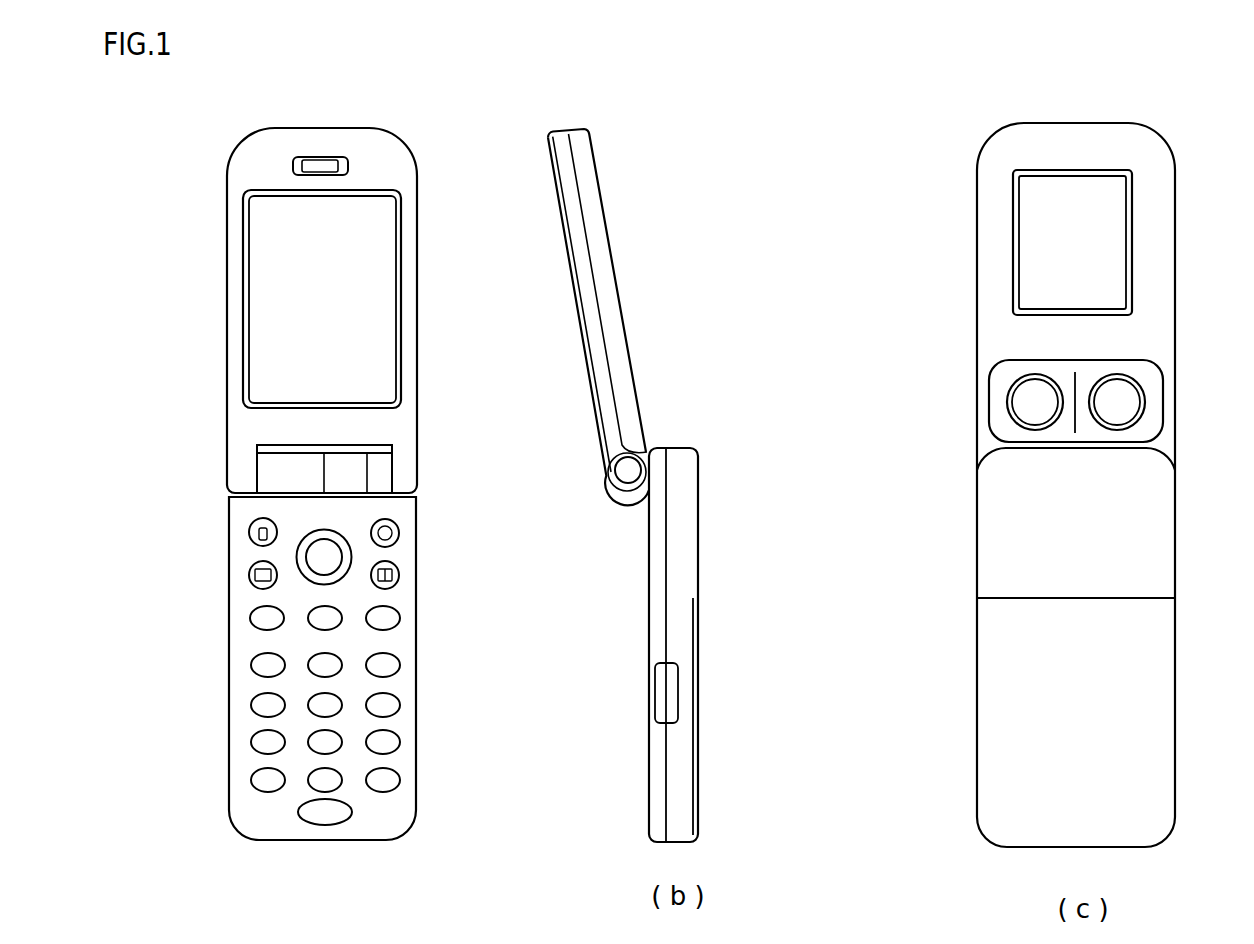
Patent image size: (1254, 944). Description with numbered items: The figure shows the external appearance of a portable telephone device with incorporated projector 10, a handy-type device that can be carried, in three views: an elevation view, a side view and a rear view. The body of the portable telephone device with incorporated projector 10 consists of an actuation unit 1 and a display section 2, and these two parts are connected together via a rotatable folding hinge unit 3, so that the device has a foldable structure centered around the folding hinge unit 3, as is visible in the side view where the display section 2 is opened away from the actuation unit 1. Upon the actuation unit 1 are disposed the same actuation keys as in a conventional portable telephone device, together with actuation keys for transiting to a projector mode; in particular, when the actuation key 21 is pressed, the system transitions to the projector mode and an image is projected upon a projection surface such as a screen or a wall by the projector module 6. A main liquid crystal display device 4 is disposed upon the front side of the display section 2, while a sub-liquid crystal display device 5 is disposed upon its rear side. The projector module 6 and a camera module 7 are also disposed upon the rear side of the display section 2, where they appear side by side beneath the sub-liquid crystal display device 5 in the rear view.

The portable telephone device with incorporated projector 10 is at (212, 306).
The display section 2 is at (232, 168).
The main liquid crystal display device 4 is at (377, 217).
The actuation unit 1 is at (232, 785).
The actuation key 21 is at (353, 814).
The folding hinge unit 3 is at (631, 465).
The sub-liquid crystal display device 5 is at (1108, 215).
The projector module 6 is at (1017, 405).
The camera module 7 is at (1130, 407).